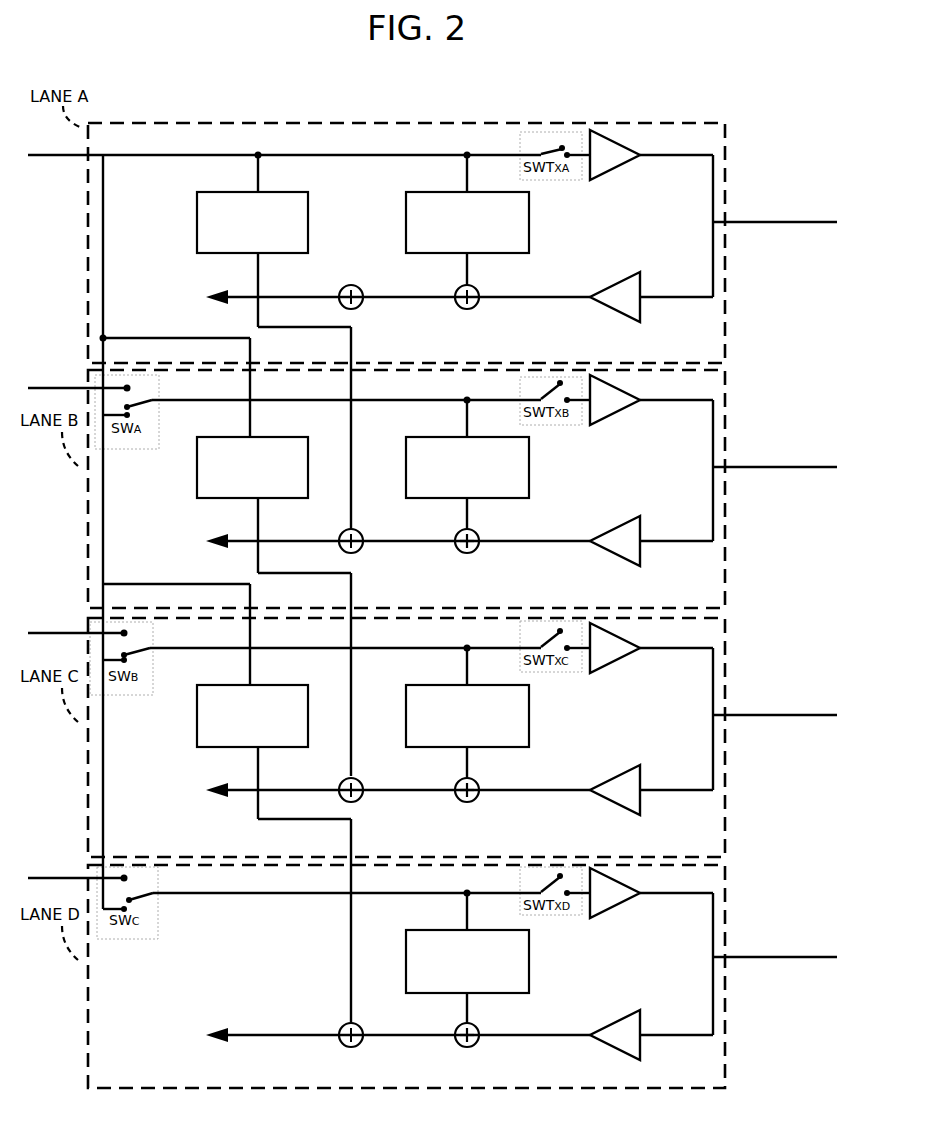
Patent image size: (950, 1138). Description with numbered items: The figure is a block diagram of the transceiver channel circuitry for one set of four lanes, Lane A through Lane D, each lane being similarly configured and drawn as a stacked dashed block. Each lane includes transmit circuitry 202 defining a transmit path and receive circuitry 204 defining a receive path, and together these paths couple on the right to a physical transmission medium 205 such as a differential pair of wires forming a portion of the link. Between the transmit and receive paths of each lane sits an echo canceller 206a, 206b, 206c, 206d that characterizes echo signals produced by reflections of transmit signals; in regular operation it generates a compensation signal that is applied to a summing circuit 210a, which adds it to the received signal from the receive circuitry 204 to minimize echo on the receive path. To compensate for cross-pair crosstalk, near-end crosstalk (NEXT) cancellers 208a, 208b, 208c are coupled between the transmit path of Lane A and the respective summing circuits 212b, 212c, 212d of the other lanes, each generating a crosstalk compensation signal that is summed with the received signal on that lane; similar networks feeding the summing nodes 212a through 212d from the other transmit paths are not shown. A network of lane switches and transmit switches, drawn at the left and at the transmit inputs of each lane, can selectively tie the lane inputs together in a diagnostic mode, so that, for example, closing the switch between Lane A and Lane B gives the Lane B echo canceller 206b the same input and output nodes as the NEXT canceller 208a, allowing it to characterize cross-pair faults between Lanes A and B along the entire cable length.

The transmit circuitry 202 is at (608, 138).
The receive circuitry 204 is at (614, 282).
The physical transmission medium 205 is at (752, 222).
The echo canceller 206a is at (467, 220).
The echo canceller 206b is at (467, 464).
The echo canceller 206c is at (467, 713).
The echo canceller 206d is at (467, 958).
The near-end crosstalk (NEXT) canceller 208a is at (252, 204).
The near-end crosstalk (NEXT) canceller 208b is at (252, 467).
The near-end crosstalk (NEXT) canceller 208c is at (252, 716).
The summing circuit 210a is at (471, 286).
The summing circuit 212a is at (355, 286).
The summing circuit 212b is at (356, 530).
The summing circuit 212c is at (356, 778).
The summing circuit 212d is at (356, 1023).